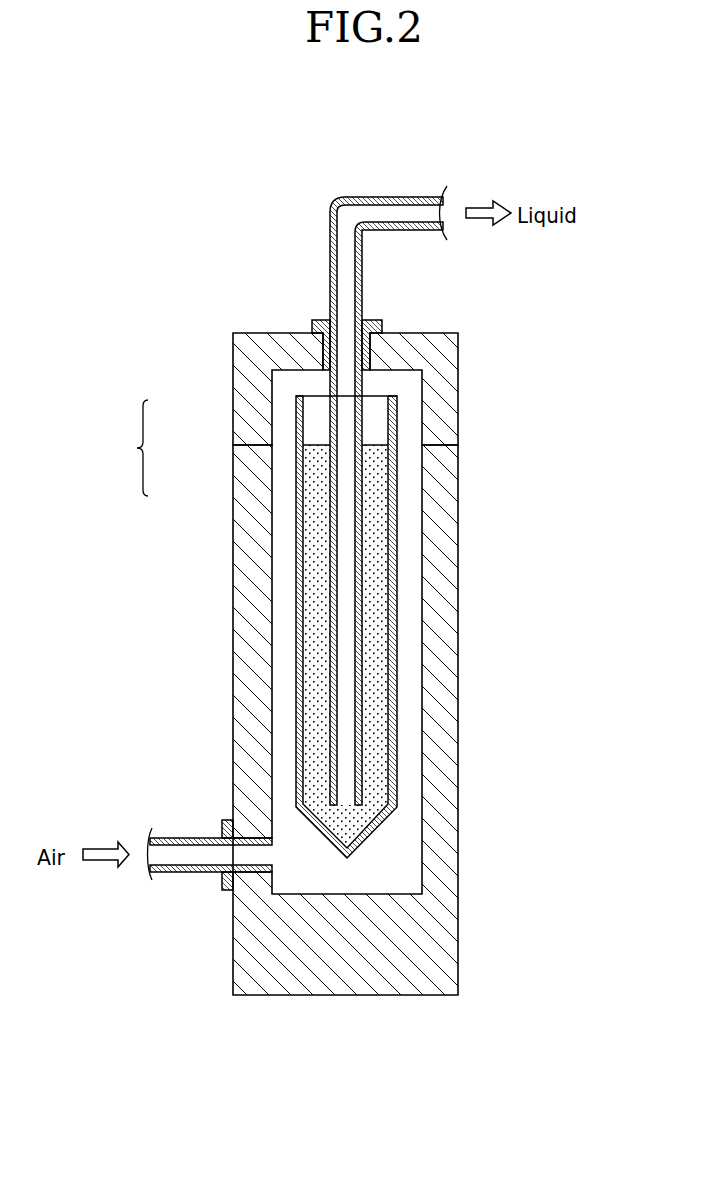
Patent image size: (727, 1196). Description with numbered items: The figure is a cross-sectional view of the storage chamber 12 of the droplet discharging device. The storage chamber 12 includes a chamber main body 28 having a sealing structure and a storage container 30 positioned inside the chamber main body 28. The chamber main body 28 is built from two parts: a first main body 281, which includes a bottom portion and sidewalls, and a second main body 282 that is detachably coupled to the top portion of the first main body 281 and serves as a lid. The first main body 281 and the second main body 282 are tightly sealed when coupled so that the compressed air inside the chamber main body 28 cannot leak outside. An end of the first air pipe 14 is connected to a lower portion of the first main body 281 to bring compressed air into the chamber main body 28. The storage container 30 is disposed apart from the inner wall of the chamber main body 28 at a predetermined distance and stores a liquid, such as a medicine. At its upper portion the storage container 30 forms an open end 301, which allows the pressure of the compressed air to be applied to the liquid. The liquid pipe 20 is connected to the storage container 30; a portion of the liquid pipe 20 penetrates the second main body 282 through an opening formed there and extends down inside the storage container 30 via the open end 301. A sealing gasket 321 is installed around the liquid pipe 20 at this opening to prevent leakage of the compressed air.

The storage chamber 12 is at (344, 664).
The first air pipe 14 is at (183, 837).
The liquid pipe 20 is at (383, 197).
The chamber main body 28 is at (126, 448).
The first main body 281 is at (247, 484).
The second main body 282 is at (247, 409).
The storage container 30 is at (395, 493).
The open end 301 is at (374, 395).
The sealing gasket 321 is at (372, 320).